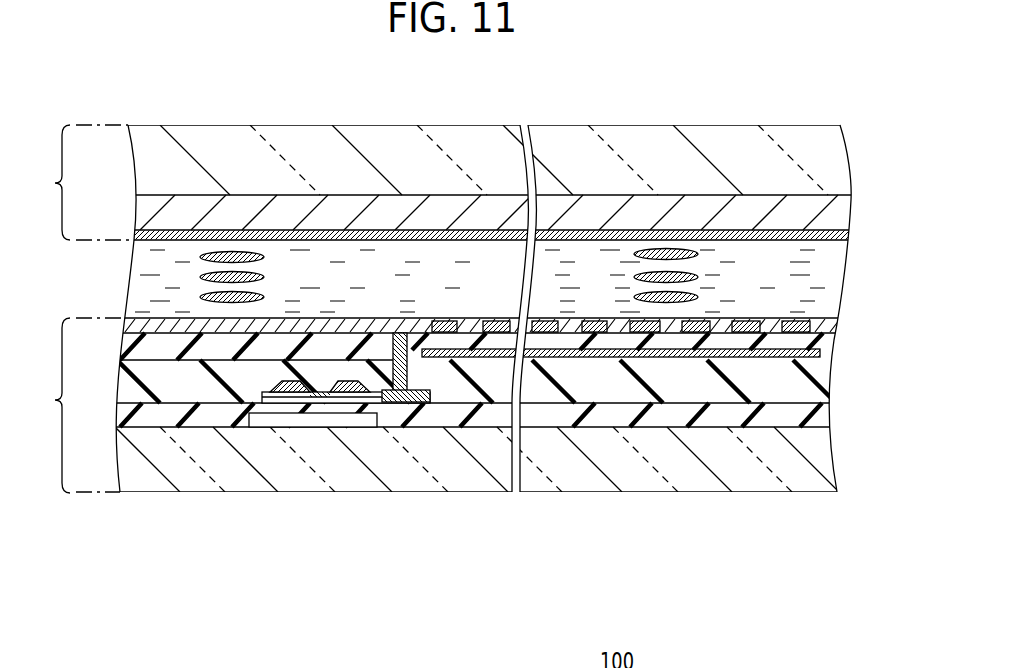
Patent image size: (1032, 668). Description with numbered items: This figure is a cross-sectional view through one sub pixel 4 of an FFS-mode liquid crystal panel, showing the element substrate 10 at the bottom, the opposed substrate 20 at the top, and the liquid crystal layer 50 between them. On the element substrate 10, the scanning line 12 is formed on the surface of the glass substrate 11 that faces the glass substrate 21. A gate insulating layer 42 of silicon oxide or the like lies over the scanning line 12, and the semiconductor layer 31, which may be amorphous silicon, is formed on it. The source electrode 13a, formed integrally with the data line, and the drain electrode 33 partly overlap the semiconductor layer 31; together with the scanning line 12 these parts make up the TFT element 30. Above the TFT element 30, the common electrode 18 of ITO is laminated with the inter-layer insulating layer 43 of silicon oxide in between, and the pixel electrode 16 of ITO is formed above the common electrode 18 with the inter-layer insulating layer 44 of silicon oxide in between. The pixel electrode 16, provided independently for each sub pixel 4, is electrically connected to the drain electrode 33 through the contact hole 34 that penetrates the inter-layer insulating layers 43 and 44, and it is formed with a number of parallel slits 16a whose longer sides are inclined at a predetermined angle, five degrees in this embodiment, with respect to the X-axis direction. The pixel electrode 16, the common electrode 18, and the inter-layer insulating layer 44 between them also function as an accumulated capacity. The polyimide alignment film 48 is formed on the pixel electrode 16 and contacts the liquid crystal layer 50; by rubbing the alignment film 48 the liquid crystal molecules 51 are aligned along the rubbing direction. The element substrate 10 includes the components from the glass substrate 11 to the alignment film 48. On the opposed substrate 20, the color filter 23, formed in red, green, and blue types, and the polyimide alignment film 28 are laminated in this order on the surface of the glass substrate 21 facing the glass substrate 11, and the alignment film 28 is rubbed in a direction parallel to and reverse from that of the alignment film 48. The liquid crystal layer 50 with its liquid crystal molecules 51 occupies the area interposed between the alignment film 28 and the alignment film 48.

The sub pixel 4 is at (697, 90).
The element substrate 10 is at (77, 405).
The glass substrate 11 is at (827, 466).
The scanning line 12 is at (272, 426).
The source electrode 13a is at (239, 396).
The pixel electrode 16 is at (490, 318).
The slit 16a is at (756, 318).
The common electrode 18 is at (817, 357).
The opposed substrate 20 is at (82, 182).
The glass substrate 21 is at (840, 164).
The color filter 23 is at (840, 210).
The alignment film 28 is at (840, 238).
The TFT element 30 is at (311, 460).
The semiconductor layer 31 is at (331, 402).
The drain electrode 33 is at (311, 431).
The contact hole 34 is at (410, 361).
The gate insulating layer 42 is at (818, 417).
The inter-layer insulating layer 43 is at (818, 391).
The inter-layer insulating layer 44 is at (827, 344).
The alignment film 48 is at (838, 318).
The liquid crystal layer 50 is at (838, 268).
The liquid crystal molecules 51 is at (266, 278).